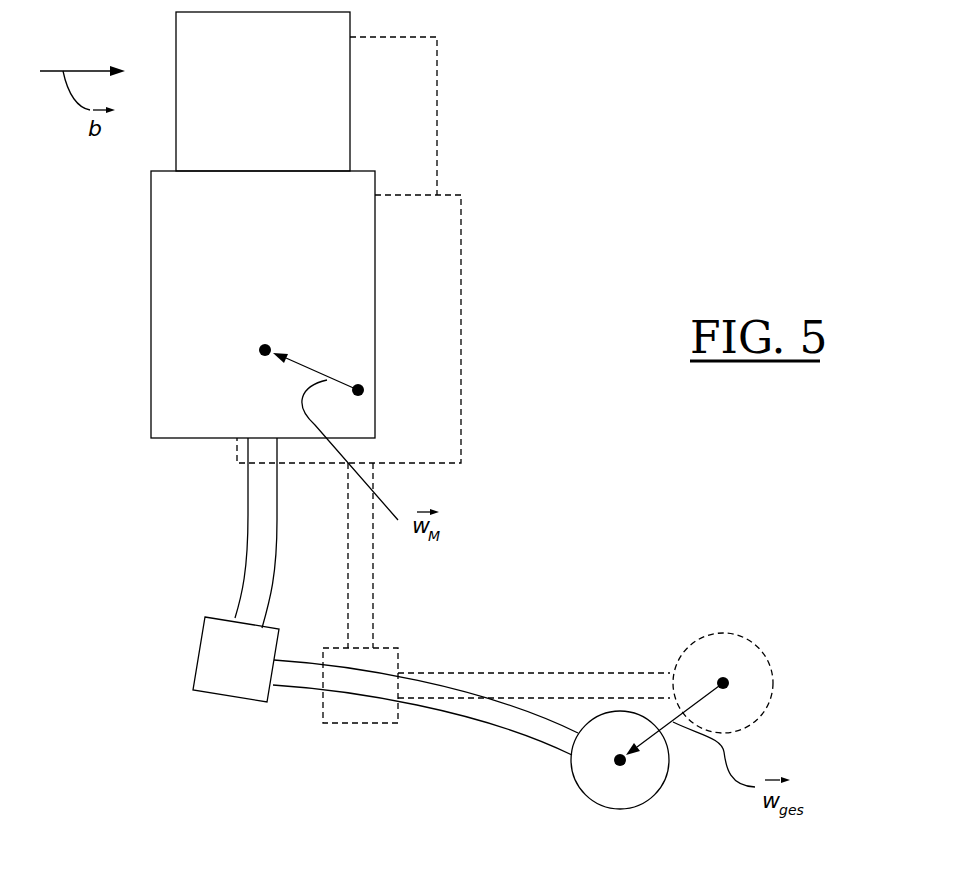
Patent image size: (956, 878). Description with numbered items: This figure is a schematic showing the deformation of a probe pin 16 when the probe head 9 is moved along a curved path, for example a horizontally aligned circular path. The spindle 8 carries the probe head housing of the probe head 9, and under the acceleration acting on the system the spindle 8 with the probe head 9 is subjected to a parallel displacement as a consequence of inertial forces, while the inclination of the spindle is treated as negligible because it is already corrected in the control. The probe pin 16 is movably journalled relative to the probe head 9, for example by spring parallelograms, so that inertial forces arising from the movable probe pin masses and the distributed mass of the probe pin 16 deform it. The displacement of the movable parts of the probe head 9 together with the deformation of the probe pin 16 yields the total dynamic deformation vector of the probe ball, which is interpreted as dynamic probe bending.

The spindle 8 is at (318, 127).
The probe head 9 is at (337, 295).
The probe pin 16 is at (296, 724).